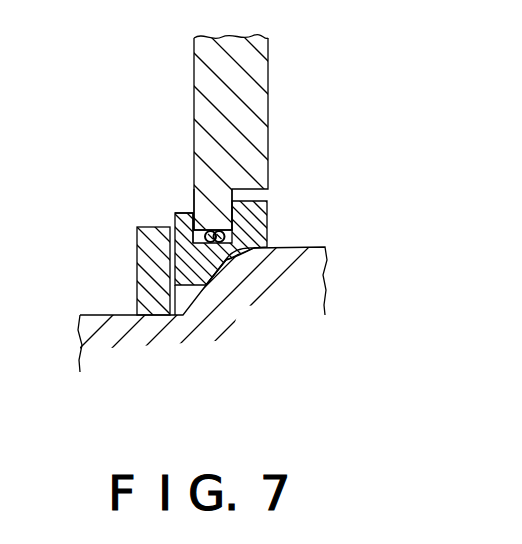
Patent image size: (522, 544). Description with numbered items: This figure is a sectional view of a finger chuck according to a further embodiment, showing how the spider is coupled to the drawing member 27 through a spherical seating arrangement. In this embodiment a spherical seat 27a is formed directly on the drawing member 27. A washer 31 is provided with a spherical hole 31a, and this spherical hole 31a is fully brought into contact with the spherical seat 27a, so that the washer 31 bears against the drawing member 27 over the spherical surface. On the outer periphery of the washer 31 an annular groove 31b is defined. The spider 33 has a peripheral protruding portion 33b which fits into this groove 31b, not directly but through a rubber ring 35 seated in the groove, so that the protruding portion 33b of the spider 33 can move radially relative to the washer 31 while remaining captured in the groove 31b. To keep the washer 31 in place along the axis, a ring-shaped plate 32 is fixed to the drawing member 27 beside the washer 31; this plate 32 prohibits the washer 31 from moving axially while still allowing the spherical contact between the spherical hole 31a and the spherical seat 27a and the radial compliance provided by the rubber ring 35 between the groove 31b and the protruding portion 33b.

The drawing member 27 is at (297, 298).
The spherical seat 27a is at (257, 247).
The washer 31 is at (267, 199).
The spherical hole 31a is at (212, 280).
The annular groove 31b is at (172, 226).
The ring-shaped plate 32 is at (138, 258).
The spider 33 is at (258, 108).
The peripheral protruding portion 33b is at (194, 212).
The rubber ring 35 is at (199, 233).